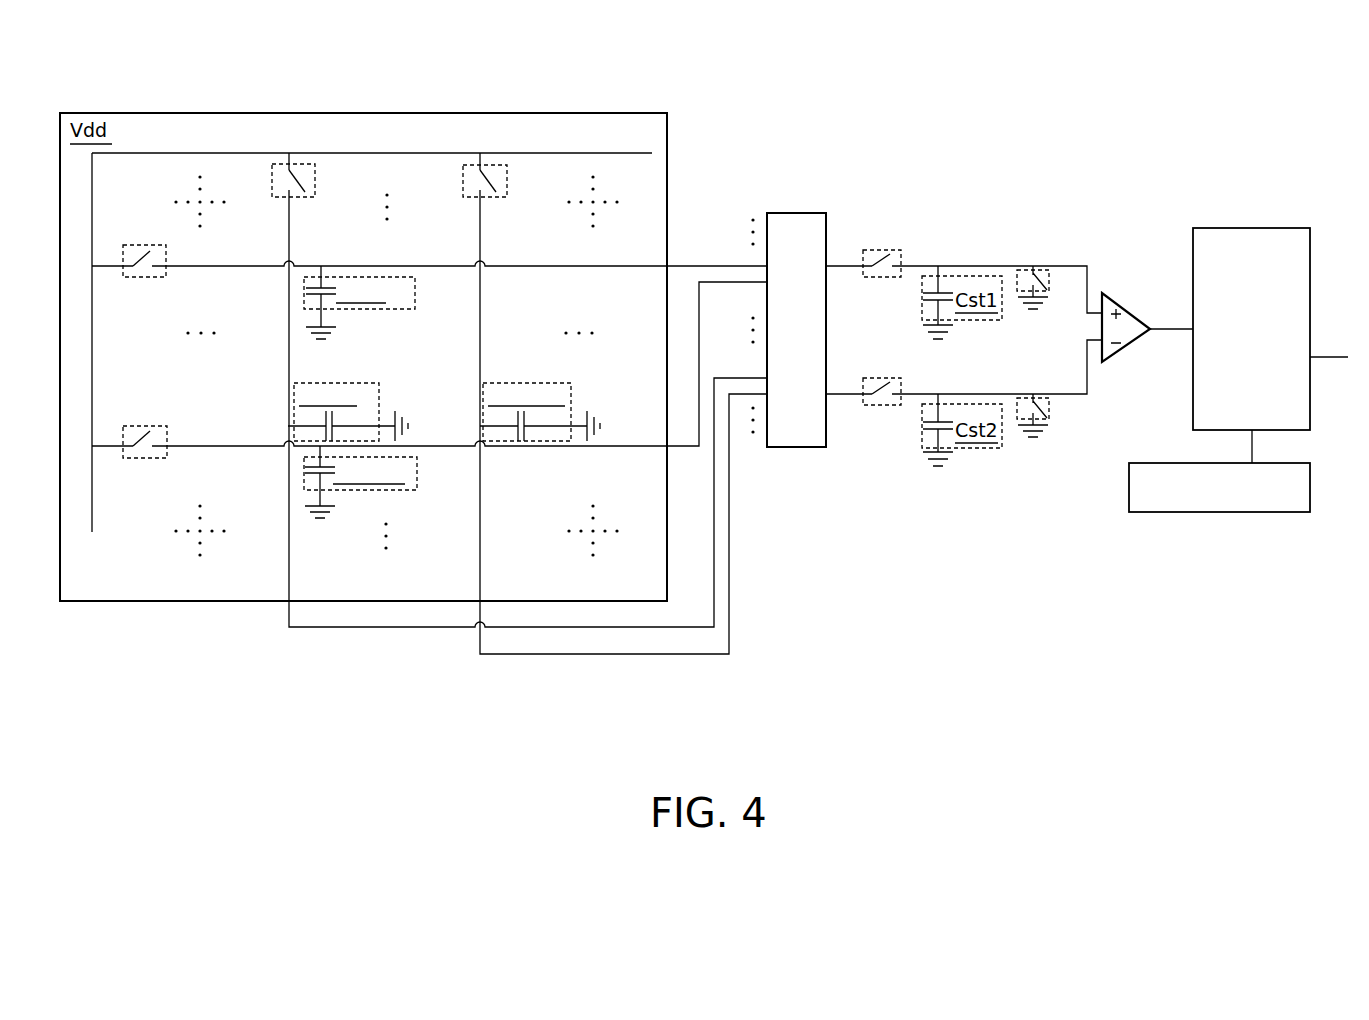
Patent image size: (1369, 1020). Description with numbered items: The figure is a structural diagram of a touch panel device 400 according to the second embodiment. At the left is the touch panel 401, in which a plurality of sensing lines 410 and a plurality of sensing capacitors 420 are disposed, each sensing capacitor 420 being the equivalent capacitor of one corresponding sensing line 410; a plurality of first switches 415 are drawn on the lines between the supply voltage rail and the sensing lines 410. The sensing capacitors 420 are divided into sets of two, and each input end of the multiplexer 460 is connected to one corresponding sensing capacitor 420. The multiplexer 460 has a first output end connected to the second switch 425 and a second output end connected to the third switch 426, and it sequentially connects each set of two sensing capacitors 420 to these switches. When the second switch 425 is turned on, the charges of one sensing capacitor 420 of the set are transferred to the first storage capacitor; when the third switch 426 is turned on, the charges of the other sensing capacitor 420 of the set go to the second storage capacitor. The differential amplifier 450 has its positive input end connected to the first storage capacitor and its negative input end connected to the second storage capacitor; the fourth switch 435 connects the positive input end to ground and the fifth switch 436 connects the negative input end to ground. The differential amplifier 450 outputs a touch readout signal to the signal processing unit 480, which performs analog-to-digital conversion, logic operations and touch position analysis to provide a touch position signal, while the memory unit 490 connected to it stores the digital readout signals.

The touch panel device 400 is at (1243, 155).
The touch panel 401 is at (667, 170).
The sensing lines 410 is at (205, 264).
The first switches 415 is at (151, 246).
The sensing capacitors 420 is at (415, 293).
The second switch 425 is at (882, 277).
The third switch 426 is at (882, 405).
The fourth switch 435 is at (1049, 286).
The fifth switch 436 is at (1049, 414).
The differential amplifier 450 is at (1107, 312).
The multiplexer 460 is at (808, 213).
The signal processing unit 480 is at (1250, 228).
The memory unit 490 is at (1170, 463).